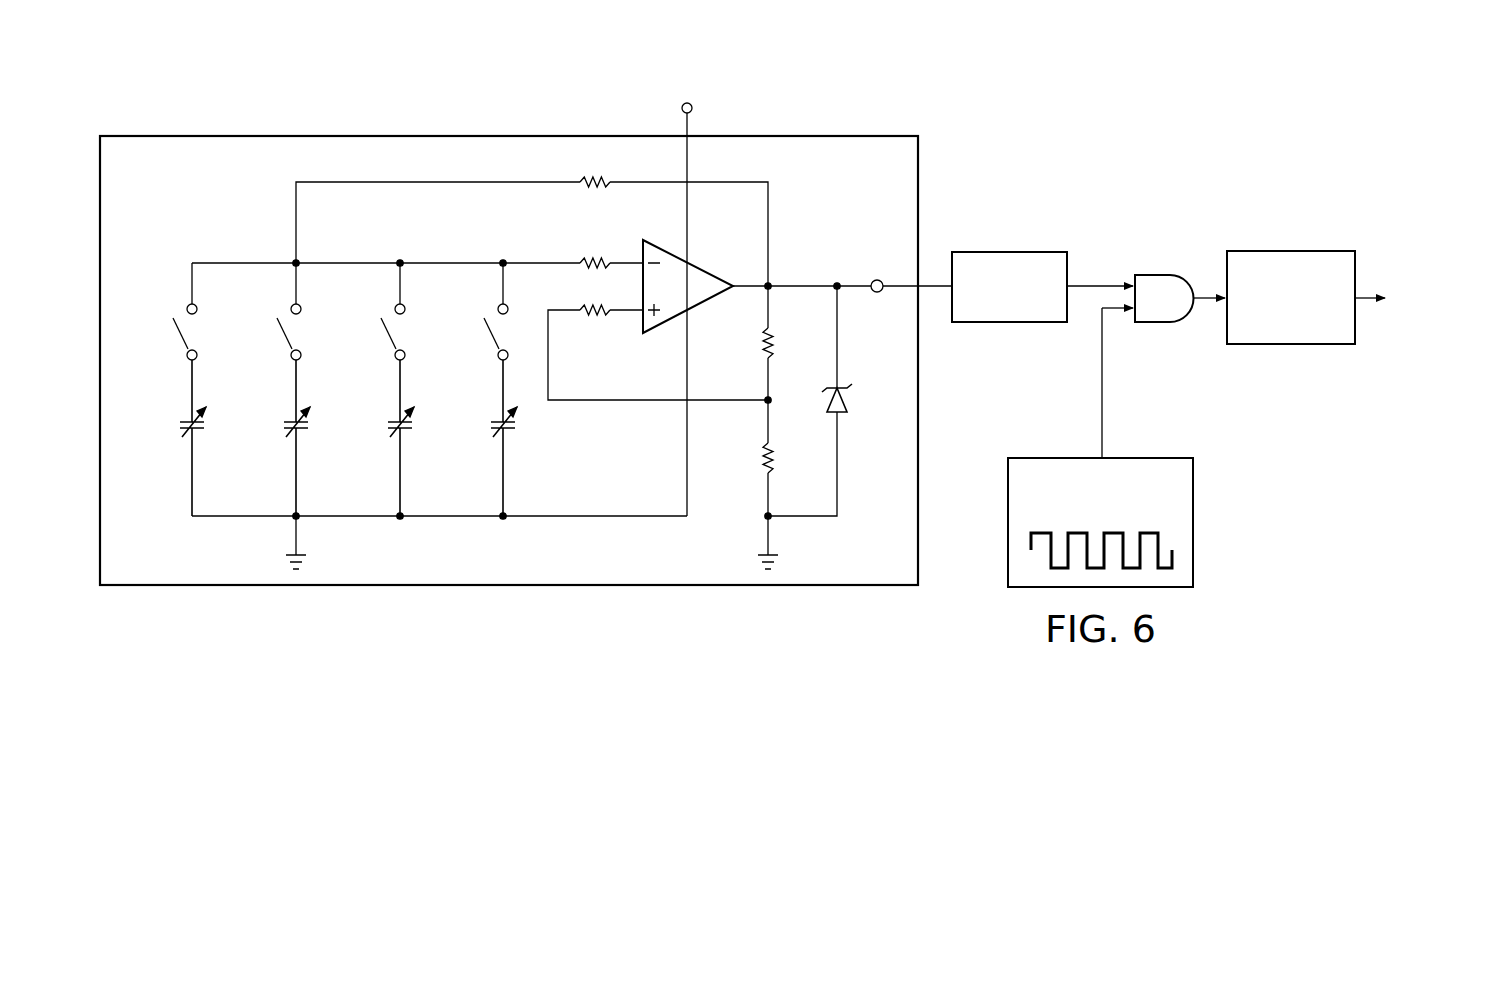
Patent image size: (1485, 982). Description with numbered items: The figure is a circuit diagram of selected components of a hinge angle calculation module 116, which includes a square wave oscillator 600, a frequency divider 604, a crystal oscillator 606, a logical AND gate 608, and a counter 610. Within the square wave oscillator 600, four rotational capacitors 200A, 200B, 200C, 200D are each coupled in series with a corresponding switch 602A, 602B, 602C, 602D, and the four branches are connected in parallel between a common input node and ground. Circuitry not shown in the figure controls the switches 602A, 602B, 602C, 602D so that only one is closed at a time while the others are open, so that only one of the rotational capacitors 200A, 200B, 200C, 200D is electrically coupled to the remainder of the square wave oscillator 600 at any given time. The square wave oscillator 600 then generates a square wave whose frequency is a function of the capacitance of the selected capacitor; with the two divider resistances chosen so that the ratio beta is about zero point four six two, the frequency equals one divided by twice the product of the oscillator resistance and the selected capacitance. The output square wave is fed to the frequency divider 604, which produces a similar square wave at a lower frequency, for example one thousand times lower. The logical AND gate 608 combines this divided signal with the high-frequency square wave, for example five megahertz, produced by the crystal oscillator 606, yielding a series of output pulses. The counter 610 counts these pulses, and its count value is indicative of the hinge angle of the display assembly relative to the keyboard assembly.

The hinge angle calculation module 116 is at (1093, 78).
The square wave oscillator 600 is at (339, 133).
The switch 602A is at (181, 338).
The switch 602B is at (285, 338).
The switch 602C is at (389, 338).
The switch 602D is at (492, 338).
The rotational capacitor 200A is at (179, 429).
The rotational capacitor 200B is at (283, 429).
The rotational capacitor 200C is at (387, 429).
The rotational capacitor 200D is at (490, 429).
The frequency divider 604 is at (1010, 252).
The crystal oscillator 606 is at (1193, 520).
The logical AND gate 608 is at (1165, 275).
The counter 610 is at (1290, 251).